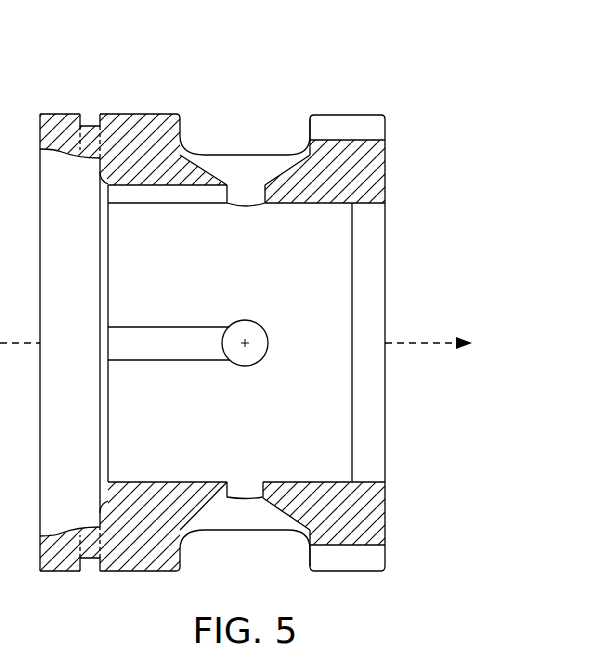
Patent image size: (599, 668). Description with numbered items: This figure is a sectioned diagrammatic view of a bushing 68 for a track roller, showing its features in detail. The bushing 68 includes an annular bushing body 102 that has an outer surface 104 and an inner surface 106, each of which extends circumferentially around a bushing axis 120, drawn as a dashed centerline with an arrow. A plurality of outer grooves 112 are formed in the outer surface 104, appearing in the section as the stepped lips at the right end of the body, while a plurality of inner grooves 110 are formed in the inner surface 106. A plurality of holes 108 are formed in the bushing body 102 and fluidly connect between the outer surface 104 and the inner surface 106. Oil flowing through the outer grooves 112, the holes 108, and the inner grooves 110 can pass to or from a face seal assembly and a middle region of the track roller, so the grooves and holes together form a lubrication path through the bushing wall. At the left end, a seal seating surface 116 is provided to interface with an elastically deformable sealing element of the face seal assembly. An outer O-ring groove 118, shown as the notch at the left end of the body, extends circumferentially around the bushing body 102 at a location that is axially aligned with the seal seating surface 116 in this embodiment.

The bushing 68 is at (405, 106).
The annular bushing body 102 is at (380, 156).
The outer surface 104 is at (143, 113).
The inner surface 106 is at (318, 204).
The holes 108 is at (252, 205).
The inner grooves 110 is at (158, 187).
The outer grooves 112 is at (342, 137).
The seal seating surface 116 is at (83, 527).
The outer O-ring groove 118 is at (96, 113).
The bushing axis 120 is at (435, 343).